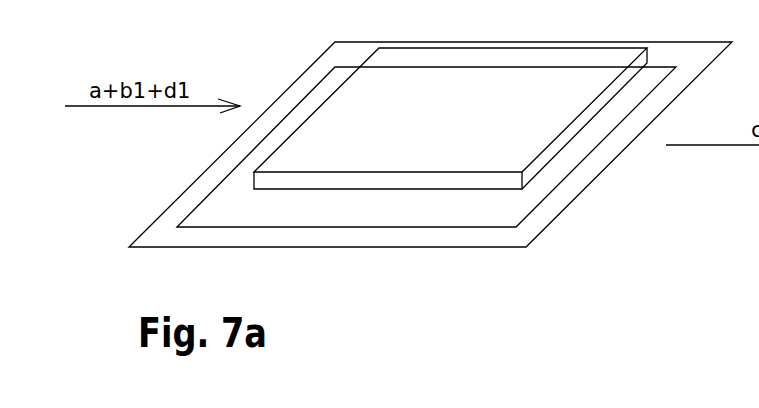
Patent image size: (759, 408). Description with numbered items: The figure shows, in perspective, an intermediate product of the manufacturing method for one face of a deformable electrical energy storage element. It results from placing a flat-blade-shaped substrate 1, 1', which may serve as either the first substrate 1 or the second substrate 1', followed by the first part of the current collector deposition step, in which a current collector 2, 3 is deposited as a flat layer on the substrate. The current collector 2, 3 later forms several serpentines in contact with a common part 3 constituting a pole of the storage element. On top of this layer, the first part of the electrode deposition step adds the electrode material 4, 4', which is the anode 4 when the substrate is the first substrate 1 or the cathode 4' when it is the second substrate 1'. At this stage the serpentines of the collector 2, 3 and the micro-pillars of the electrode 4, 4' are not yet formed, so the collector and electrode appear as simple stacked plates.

The first substrate 1 is at (430, 204).
The second substrate 1' is at (430, 204).
The current collector 2 is at (394, 147).
The common part 3 is at (238, 205).
The anode 4 is at (413, 116).
The cathode 4' is at (413, 116).